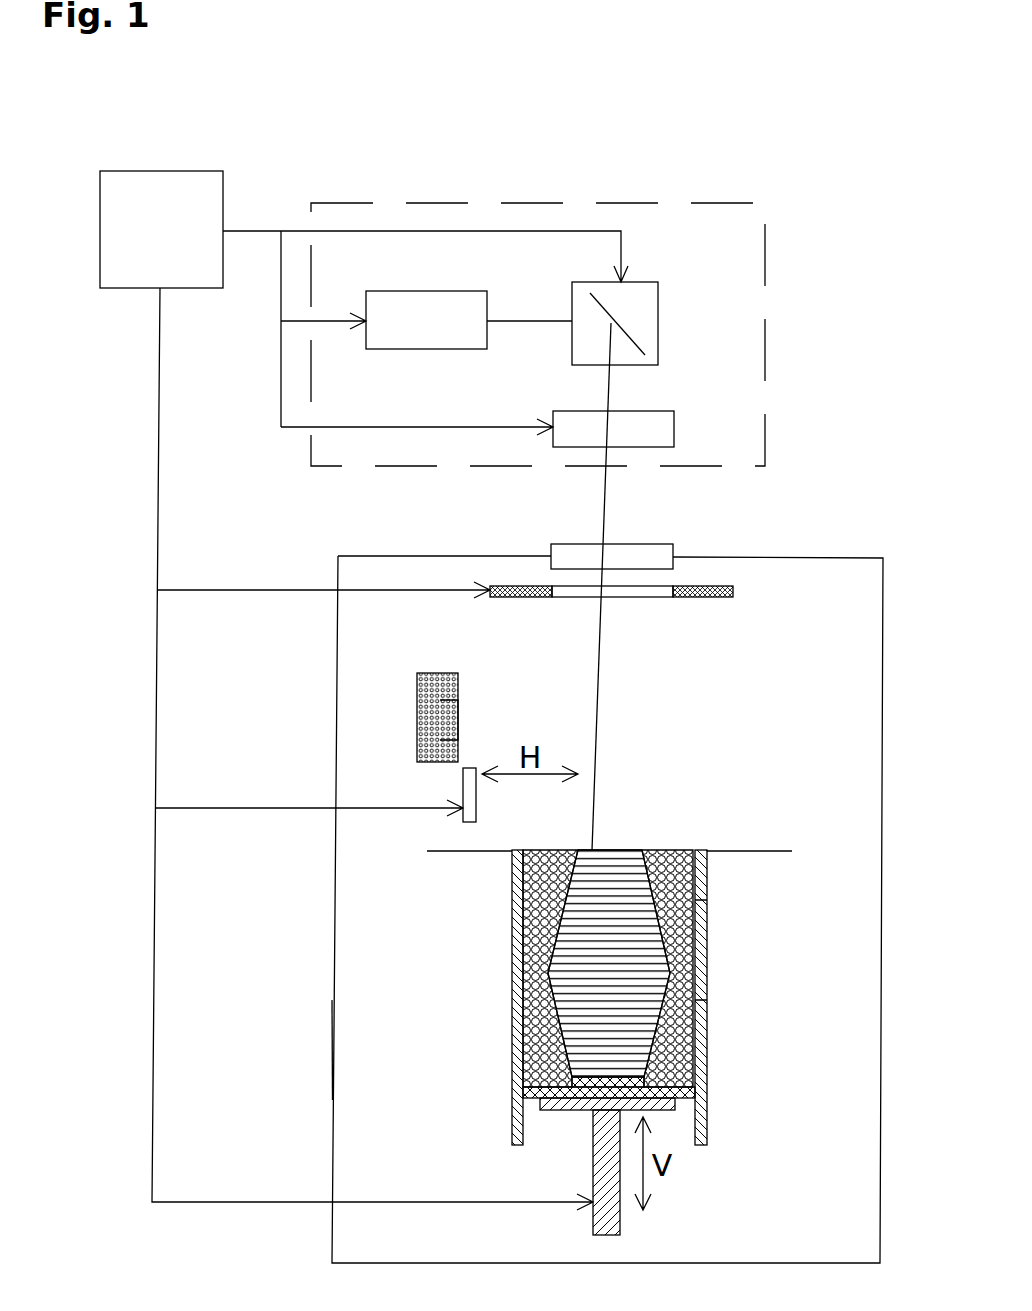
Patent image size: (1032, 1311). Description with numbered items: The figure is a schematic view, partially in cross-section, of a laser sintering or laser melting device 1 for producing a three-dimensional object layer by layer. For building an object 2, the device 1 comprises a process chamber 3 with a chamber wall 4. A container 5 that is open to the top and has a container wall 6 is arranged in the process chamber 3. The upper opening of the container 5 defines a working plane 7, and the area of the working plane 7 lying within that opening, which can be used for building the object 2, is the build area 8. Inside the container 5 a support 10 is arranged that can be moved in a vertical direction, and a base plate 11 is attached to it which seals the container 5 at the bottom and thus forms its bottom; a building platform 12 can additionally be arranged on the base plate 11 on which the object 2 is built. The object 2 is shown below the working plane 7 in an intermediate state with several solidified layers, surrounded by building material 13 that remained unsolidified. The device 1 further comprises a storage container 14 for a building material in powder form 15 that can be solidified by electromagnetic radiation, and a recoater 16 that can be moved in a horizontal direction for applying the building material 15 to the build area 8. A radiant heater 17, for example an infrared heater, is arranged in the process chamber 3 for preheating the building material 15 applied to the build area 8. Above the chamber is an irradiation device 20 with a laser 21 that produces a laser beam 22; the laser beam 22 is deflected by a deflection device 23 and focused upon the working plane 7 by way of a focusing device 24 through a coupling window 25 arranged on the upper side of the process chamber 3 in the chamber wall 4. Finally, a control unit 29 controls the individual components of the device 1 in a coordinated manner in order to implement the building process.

The laser sintering device 1 is at (874, 196).
The object 2 is at (627, 908).
The process chamber 3 is at (799, 590).
The chamber wall 4 is at (332, 1048).
The container 5 is at (720, 1064).
The container wall 6 is at (702, 1000).
The working plane 7 is at (760, 850).
The build area 8 is at (668, 850).
The support 10 is at (583, 1110).
The base plate 11 is at (538, 1102).
The building platform 12 is at (560, 1080).
The building material 13 is at (530, 893).
The storage container 14 is at (436, 672).
The building material in powder form 15 is at (445, 720).
The recoater 16 is at (472, 793).
The radiant heater 17 is at (517, 585).
The irradiation device 20 is at (765, 323).
The laser 21 is at (425, 350).
The laser beam 22 is at (509, 321).
The deflection device 23 is at (645, 293).
The focusing device 24 is at (643, 424).
The coupling window 25 is at (648, 558).
The control unit 29 is at (161, 229).